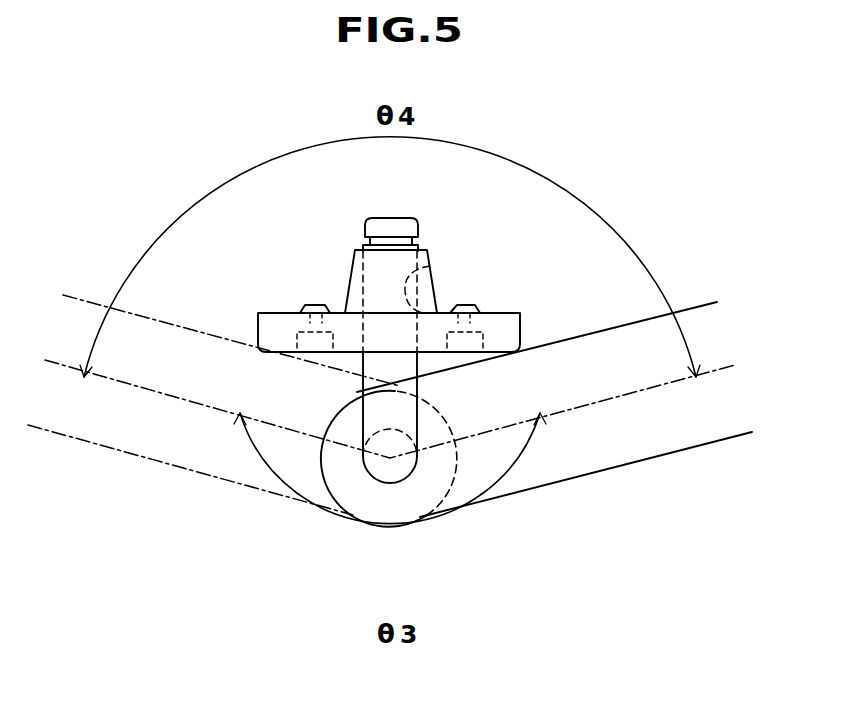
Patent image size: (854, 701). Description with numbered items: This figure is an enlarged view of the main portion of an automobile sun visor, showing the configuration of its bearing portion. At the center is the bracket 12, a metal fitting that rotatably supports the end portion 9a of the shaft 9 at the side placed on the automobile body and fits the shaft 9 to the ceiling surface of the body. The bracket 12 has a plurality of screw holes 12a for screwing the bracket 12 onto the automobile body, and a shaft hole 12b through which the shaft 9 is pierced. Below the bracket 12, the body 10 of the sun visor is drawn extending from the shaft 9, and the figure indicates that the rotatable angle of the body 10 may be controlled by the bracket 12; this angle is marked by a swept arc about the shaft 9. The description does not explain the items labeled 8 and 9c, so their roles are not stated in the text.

The pivot boss 8 is at (576, 535).
The shaft 9 is at (398, 220).
The end portion 9a is at (367, 222).
The pin neck 9c is at (370, 240).
The body 10 is at (644, 461).
The bracket 12 is at (433, 287).
The screw holes 12a is at (312, 316).
The shaft hole 12b is at (432, 265).